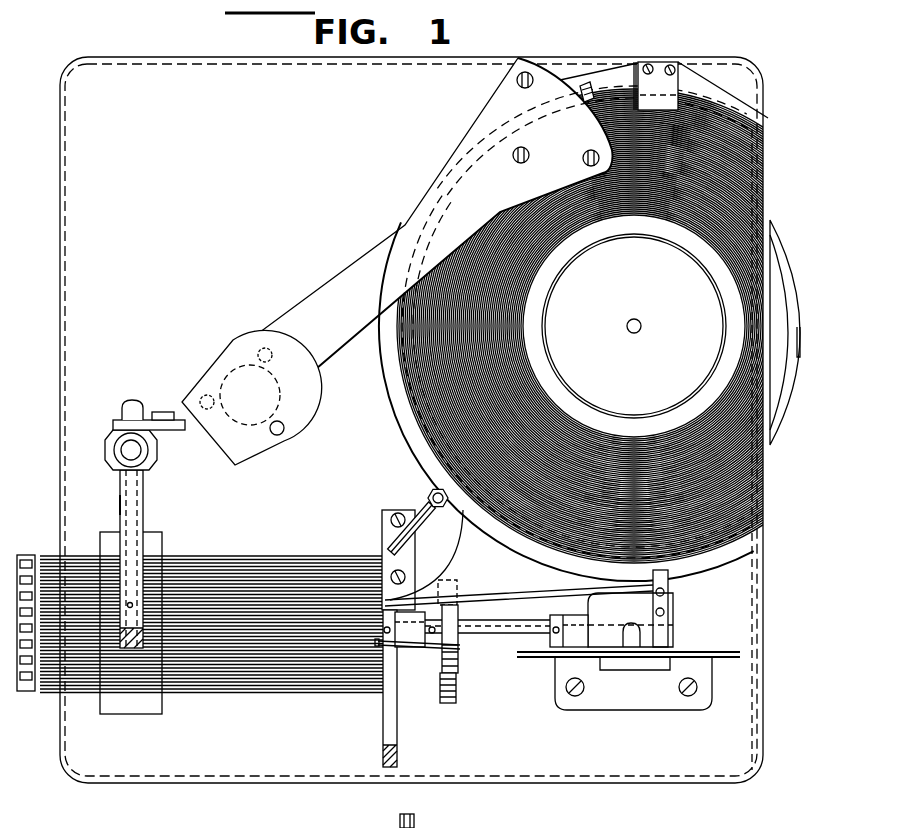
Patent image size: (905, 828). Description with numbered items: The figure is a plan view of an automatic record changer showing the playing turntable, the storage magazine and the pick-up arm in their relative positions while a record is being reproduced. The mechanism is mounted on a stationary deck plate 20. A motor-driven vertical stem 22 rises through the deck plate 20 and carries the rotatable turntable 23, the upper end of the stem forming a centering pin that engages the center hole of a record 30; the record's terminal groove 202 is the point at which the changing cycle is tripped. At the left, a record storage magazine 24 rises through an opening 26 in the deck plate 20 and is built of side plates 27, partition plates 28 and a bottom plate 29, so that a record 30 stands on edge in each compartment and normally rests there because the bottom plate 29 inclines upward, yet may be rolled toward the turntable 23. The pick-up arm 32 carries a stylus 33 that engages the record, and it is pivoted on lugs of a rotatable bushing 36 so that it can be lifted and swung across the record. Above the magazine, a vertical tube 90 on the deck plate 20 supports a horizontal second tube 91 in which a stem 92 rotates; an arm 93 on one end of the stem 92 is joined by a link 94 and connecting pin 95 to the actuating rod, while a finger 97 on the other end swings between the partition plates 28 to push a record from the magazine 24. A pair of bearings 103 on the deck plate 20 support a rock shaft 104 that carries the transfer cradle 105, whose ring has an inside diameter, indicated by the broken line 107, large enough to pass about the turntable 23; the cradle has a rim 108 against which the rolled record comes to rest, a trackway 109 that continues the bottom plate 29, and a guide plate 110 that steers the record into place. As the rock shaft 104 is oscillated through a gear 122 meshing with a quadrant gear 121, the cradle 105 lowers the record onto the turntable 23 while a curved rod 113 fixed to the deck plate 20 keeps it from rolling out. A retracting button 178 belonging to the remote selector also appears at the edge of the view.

The deck plate 20 is at (107, 766).
The vertical stem 22 is at (632, 334).
The turntable 23 is at (400, 380).
The record storage magazine 24 is at (190, 556).
The opening 26 is at (157, 712).
The side plates 27 is at (245, 560).
The partition plates 28 is at (268, 575).
The bottom plate 29 is at (22, 555).
The record 30 is at (425, 455).
The pick-up arm 32 is at (350, 278).
The stylus 33 is at (585, 86).
The rotatable bushing 36 is at (250, 368).
The tube 90 is at (158, 457).
The second tube 91 is at (144, 513).
The stem 92 is at (121, 503).
The arm 93 is at (163, 432).
The link 94 is at (176, 413).
The connecting pin 95 is at (160, 420).
The finger 97 is at (375, 637).
The bearings 103 is at (412, 648).
The rock shaft 104 is at (495, 635).
The transfer cradle 105 is at (640, 612).
The broken line 107 is at (425, 440).
The rim 108 is at (782, 414).
The trackway 109 is at (518, 598).
The guide plate 110 is at (662, 90).
The curved rod 113 is at (398, 527).
The quadrant gear 121 is at (447, 704).
The gear 122 is at (453, 604).
The retracting button 178 is at (425, 826).
The terminal groove 202 is at (542, 306).